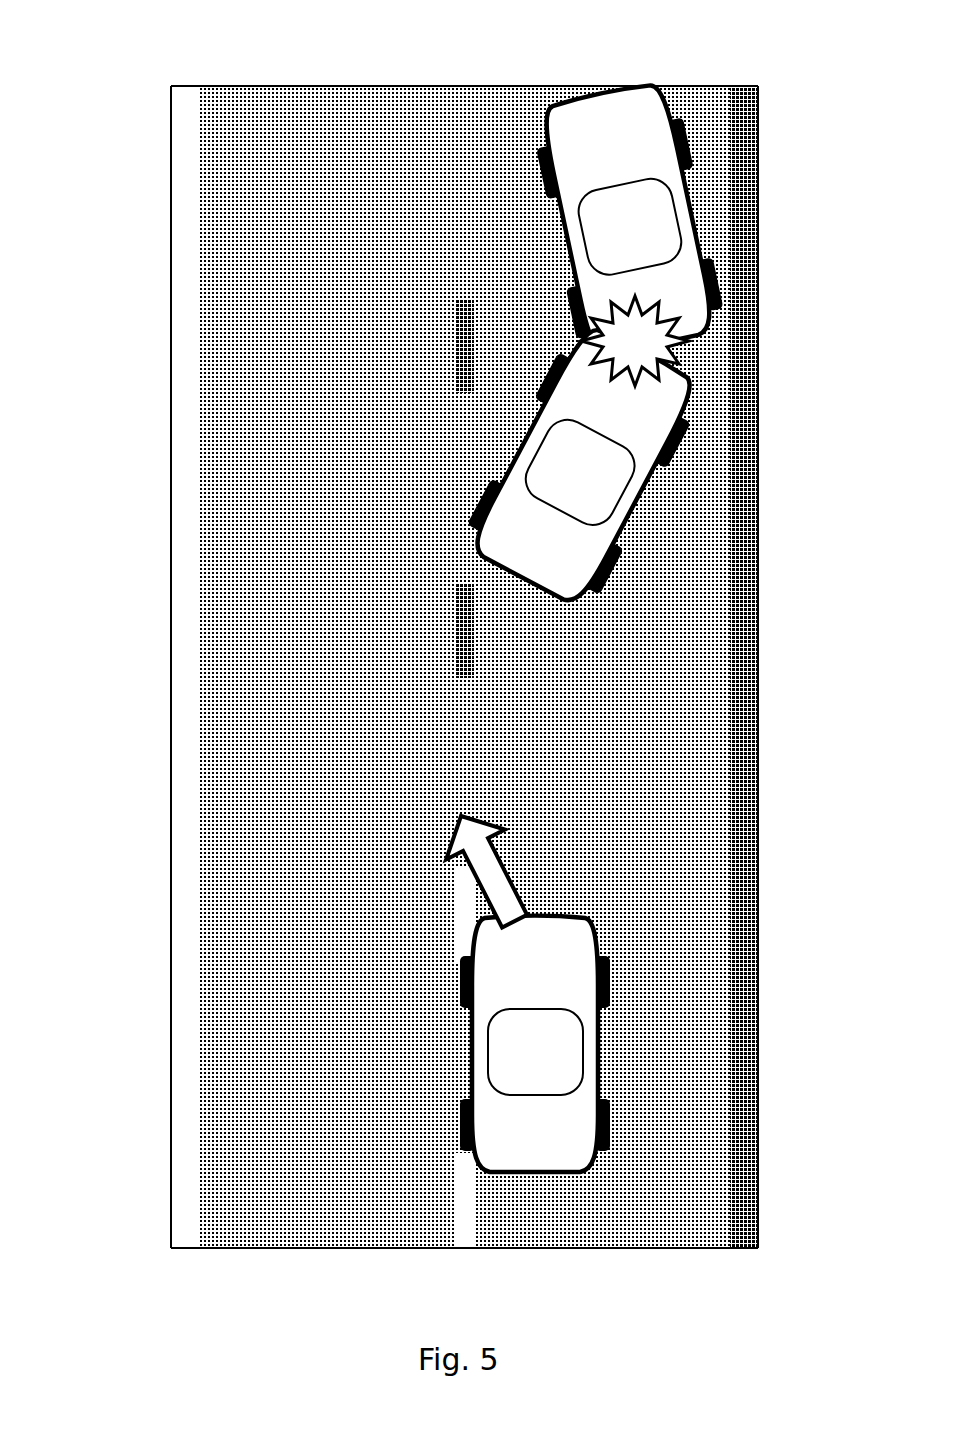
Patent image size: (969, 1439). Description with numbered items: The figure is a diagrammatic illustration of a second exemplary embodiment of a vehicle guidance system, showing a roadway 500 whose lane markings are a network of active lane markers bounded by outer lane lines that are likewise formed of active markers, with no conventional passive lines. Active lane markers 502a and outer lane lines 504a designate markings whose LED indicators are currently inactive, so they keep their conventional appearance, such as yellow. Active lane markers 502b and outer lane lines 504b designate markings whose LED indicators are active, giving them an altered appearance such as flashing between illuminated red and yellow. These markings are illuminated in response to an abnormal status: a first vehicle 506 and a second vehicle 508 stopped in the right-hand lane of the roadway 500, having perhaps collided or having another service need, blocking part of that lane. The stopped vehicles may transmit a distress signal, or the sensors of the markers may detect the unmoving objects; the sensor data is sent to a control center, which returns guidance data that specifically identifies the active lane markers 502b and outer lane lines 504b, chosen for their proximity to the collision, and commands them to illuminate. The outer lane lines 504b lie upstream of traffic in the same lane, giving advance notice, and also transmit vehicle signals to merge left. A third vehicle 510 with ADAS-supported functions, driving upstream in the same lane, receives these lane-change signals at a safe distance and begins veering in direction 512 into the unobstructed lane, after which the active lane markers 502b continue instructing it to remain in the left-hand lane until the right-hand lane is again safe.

The roadway 500 is at (468, 654).
The active lane markers (inactive) 502a is at (150, 300).
The active lane markers (illuminated) 502b is at (458, 97).
The outer lane lines (inactive) 504a is at (182, 460).
The outer lane lines (illuminated) 504b is at (738, 832).
The first vehicle 506 is at (585, 120).
The second vehicle 508 is at (552, 515).
The third vehicle 510 is at (558, 935).
The direction 512 is at (480, 820).